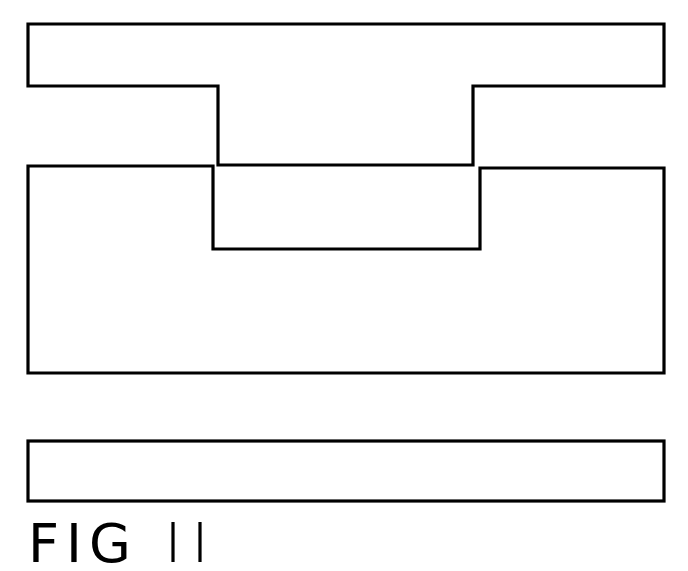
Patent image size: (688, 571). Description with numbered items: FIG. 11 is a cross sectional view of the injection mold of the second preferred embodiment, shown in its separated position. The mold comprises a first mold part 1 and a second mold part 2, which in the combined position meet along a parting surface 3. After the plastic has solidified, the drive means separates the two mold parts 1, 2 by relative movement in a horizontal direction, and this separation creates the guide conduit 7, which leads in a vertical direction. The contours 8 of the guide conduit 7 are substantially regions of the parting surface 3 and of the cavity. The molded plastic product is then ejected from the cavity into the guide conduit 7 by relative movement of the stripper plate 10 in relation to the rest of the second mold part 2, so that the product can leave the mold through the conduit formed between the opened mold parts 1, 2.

The first mold part 1 is at (346, 94).
The second mold part 2 is at (557, 350).
The parting surface 3 is at (218, 127).
The guide conduit 7 is at (348, 210).
The contours of the guide conduit 8 is at (480, 210).
The stripper plate 10 is at (346, 269).